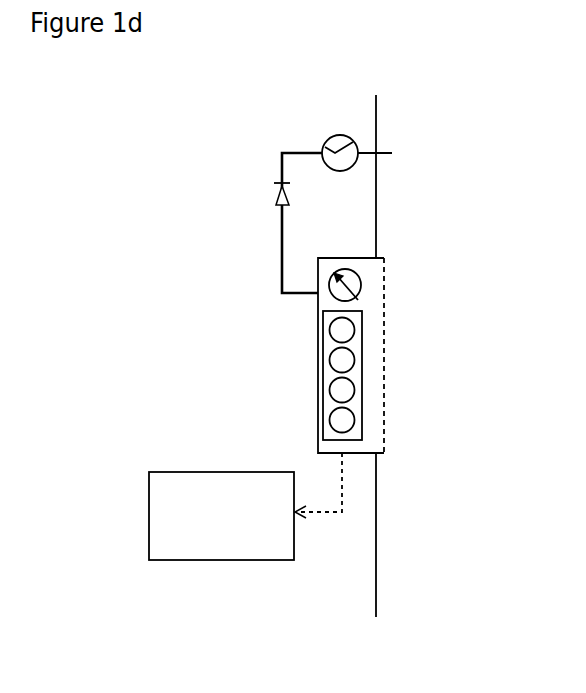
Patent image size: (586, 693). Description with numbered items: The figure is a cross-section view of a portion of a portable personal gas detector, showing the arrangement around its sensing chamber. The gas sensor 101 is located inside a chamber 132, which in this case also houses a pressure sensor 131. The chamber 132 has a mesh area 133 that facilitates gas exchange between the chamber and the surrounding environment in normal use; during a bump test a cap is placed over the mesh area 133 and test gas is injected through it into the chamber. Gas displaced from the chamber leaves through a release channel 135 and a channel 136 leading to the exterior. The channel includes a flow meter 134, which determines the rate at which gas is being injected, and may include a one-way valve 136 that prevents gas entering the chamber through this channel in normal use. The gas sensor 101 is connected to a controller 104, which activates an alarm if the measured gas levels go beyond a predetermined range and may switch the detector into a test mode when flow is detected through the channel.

The flow meter 134 is at (328, 138).
The release channel 135 is at (281, 160).
The one-way valve 136 is at (275, 197).
The pressure sensor 131 is at (362, 287).
The mesh area 133 is at (385, 347).
The gas sensor 101 is at (362, 375).
The chamber 132 is at (369, 410).
The controller 104 is at (245, 506).